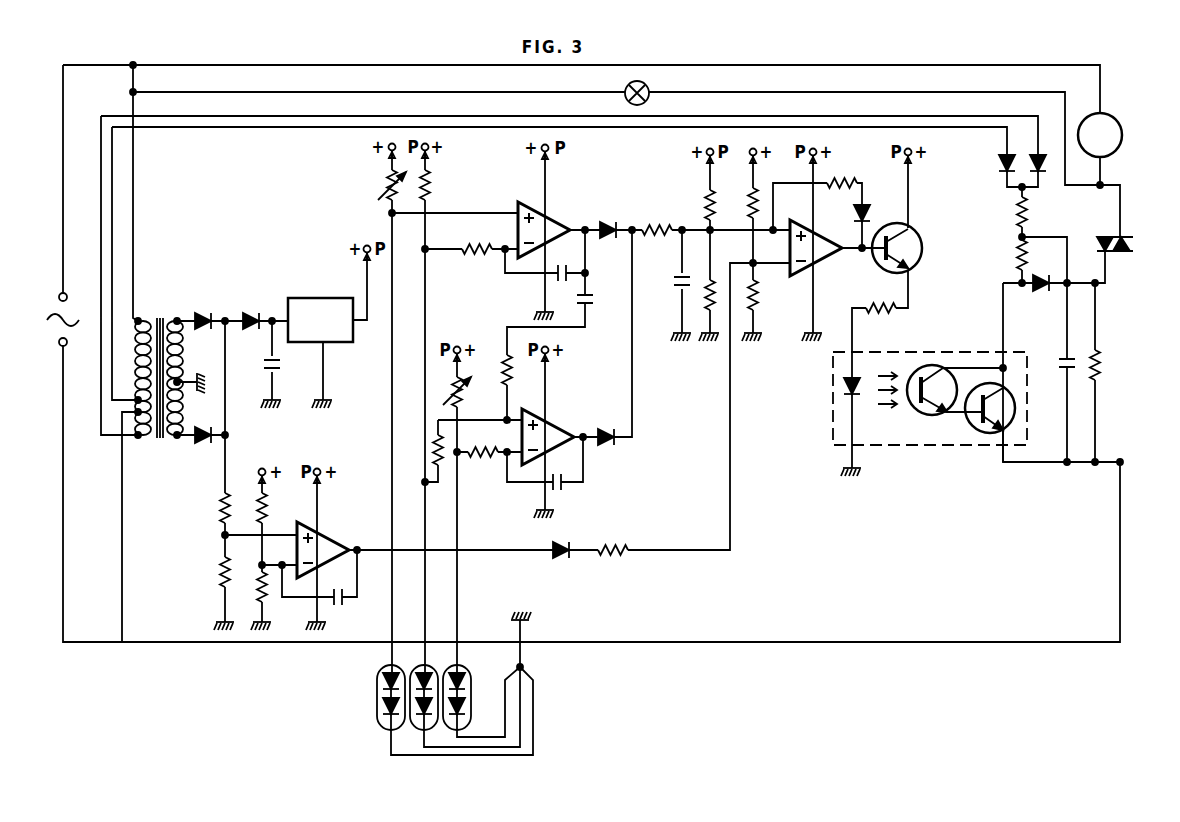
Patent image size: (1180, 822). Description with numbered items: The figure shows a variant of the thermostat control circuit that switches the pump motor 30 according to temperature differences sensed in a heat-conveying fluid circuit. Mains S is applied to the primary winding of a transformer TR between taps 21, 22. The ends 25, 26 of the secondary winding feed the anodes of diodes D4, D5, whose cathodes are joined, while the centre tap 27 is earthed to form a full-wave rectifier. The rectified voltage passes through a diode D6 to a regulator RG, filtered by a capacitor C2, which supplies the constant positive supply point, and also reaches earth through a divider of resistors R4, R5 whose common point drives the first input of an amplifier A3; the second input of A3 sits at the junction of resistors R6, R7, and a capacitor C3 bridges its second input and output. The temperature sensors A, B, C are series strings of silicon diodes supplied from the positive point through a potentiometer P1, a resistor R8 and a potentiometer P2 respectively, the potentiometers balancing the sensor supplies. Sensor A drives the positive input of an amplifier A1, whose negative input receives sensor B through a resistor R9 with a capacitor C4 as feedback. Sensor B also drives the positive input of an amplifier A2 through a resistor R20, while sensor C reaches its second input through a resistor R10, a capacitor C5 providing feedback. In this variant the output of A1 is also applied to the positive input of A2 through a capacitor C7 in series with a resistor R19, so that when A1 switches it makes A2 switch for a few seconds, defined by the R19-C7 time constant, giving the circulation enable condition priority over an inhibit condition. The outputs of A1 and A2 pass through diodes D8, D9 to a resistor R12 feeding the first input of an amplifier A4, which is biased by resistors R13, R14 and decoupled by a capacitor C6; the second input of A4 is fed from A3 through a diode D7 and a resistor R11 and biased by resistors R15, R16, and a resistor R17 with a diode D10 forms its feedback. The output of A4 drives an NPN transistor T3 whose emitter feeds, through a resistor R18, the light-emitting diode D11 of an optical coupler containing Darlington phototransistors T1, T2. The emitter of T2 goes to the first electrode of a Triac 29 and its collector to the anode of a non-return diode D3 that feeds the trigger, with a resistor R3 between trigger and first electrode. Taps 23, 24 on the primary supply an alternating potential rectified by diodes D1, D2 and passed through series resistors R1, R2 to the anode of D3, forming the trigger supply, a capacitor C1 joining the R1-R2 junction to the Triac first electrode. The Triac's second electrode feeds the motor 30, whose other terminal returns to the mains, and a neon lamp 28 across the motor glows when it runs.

The mains S is at (63, 301).
The transformer TR is at (160, 447).
The tap 21 is at (136, 412).
The tap 22 is at (138, 320).
The tap 23 is at (136, 400).
The tap 24 is at (136, 436).
The end of secondary winding 25 is at (182, 438).
The end of secondary winding 26 is at (177, 319).
The centre tap 27 is at (184, 379).
The neon lamp 28 is at (648, 90).
The Triac 29 is at (1112, 236).
The motor 30 is at (1112, 116).
The regulator RG is at (320, 296).
The diode D1 is at (1002, 160).
The diode D2 is at (1034, 162).
The non-return diode D3 is at (1042, 290).
The diode D4 is at (212, 429).
The diode D5 is at (202, 312).
The diode D6 is at (249, 312).
The diode D7 is at (561, 562).
The diode D8 is at (611, 222).
The diode D9 is at (610, 428).
The diode D10 is at (868, 210).
The light-emitting diode D11 is at (844, 378).
The resistor R1 is at (1018, 214).
The resistor R2 is at (1018, 259).
The resistor R3 is at (1093, 350).
The resistor R4 is at (222, 512).
The resistor R5 is at (222, 579).
The resistor R6 is at (266, 512).
The resistor R7 is at (264, 602).
The resistor R8 is at (428, 185).
The resistor R9 is at (489, 254).
The resistor R10 is at (474, 456).
The resistor R11 is at (615, 562).
The resistor R12 is at (656, 228).
The resistor R13 is at (702, 196).
The resistor R14 is at (715, 288).
The resistor R15 is at (748, 203).
The resistor R16 is at (762, 310).
The resistor R17 is at (836, 184).
The resistor R18 is at (872, 312).
The resistor R19 is at (503, 343).
The resistor R20 is at (444, 482).
The capacitor C1 is at (1066, 368).
The capacitor C2 is at (280, 366).
The capacitor C3 is at (339, 604).
The capacitor C4 is at (576, 270).
The capacitor C5 is at (560, 492).
The capacitor C6 is at (674, 282).
The capacitor C7 is at (594, 302).
The potentiometer P1 is at (386, 186).
The potentiometer P2 is at (464, 396).
The amplifier A1 is at (548, 220).
The amplifier A2 is at (548, 430).
The amplifier A3 is at (328, 541).
The amplifier A4 is at (818, 240).
The phototransistor T1 is at (920, 416).
The phototransistor T2 is at (970, 426).
The NPN transistor T3 is at (918, 234).
The temperature sensor A is at (374, 679).
The temperature sensor B is at (432, 676).
The temperature sensor C is at (472, 679).